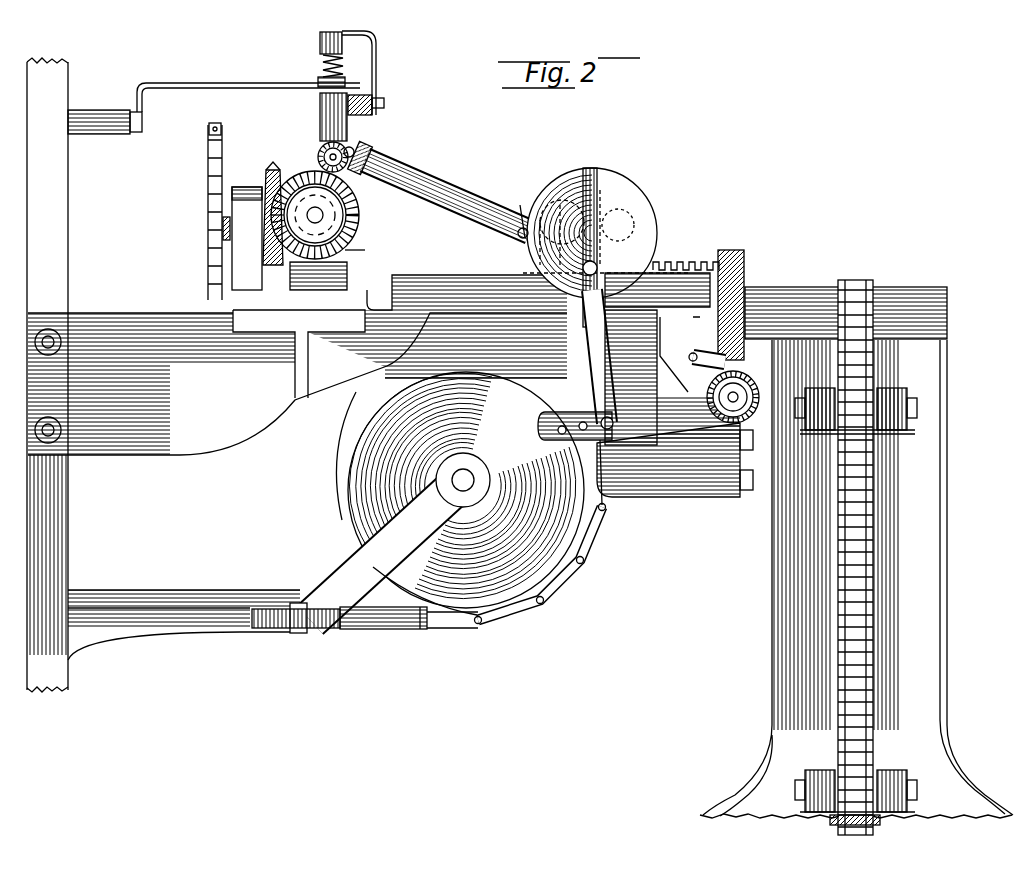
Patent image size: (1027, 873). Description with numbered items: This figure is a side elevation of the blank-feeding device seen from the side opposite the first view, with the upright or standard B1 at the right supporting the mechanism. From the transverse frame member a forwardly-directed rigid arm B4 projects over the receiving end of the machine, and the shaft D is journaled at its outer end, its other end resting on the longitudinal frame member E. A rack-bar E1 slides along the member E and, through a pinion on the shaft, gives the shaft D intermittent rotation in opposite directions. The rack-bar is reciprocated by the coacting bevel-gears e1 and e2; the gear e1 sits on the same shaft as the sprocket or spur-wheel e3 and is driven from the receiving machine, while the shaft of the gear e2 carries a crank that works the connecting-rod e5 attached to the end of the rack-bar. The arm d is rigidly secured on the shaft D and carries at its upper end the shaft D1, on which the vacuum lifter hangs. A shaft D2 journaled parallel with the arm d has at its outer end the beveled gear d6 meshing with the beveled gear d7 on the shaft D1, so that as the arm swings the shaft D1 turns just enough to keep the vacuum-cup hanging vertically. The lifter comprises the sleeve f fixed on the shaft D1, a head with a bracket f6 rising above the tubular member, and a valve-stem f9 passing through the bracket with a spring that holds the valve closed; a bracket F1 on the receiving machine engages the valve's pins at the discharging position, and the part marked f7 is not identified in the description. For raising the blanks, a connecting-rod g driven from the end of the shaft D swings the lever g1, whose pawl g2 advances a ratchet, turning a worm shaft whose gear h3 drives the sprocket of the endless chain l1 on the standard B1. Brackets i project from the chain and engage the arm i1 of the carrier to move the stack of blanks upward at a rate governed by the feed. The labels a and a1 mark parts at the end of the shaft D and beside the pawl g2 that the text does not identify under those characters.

The bracket F1 is at (214, 83).
The valve-stem f9 is at (320, 34).
The spring f7 is at (320, 80).
The bracket f6 is at (376, 70).
The sleeve f is at (348, 128).
The beveled gear d7 is at (320, 150).
The beveled gear d6 is at (368, 156).
The shaft D1 is at (355, 150).
The shaft D2 is at (440, 194).
The arm d is at (515, 215).
The sprocket or spur-wheel e3 is at (207, 175).
The bevel-gear e1 is at (280, 168).
The bevel-gear e2 is at (348, 250).
The connecting-rod e5 is at (368, 253).
The longitudinal frame member E is at (478, 292).
The rack-bar E1 is at (686, 262).
The shaft D is at (640, 222).
The gear a is at (640, 222).
The gear a1 is at (745, 375).
The gear h3 is at (733, 252).
The rigid arm B4 is at (680, 354).
The pawl g2 is at (710, 352).
The connecting-rod g is at (600, 445).
The lever g1 is at (663, 450).
The upright or standard B1 is at (945, 695).
The brackets i is at (875, 432).
The endless chain l1 is at (860, 512).
The longitudinally-extending arm i1 is at (875, 725).